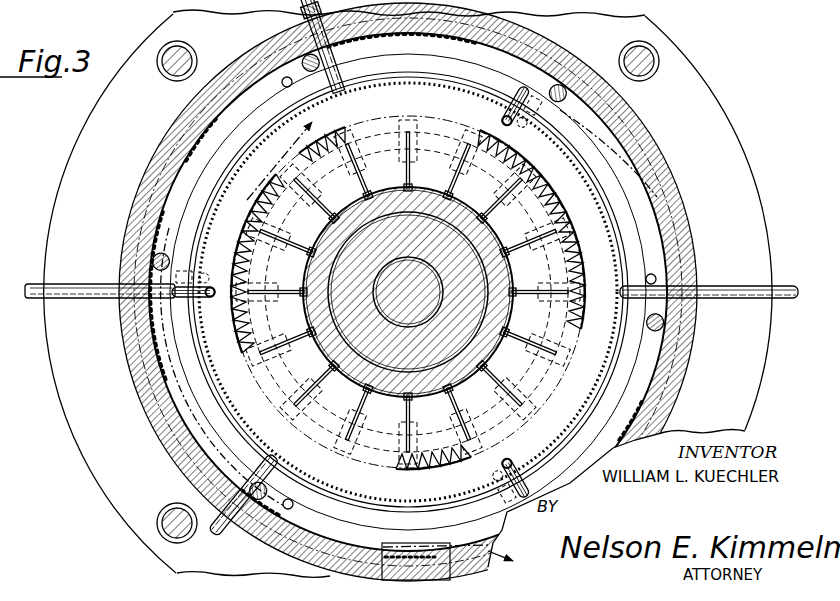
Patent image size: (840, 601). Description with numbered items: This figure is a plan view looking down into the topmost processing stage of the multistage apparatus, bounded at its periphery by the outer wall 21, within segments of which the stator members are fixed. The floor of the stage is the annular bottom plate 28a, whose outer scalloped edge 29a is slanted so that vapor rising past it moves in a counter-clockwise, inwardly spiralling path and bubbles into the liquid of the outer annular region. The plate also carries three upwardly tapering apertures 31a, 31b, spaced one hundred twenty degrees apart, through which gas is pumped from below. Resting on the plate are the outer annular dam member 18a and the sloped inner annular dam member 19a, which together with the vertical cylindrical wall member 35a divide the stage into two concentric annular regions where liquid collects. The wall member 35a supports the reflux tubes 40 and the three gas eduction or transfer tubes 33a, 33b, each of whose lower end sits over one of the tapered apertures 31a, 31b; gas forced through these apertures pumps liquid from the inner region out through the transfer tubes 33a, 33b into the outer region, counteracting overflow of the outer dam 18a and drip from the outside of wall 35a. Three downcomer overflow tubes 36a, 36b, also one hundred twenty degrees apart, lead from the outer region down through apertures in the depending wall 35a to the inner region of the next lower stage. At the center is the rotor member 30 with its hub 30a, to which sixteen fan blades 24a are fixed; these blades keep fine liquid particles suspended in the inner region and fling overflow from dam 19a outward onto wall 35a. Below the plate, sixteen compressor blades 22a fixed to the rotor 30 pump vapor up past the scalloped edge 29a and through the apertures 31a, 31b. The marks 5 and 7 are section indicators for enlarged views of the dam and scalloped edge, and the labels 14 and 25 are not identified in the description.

The section line 5- 5 is at (292, 150).
The section line 7- 7 is at (456, 561).
The shaft 14 is at (32, 283).
The outer annular dam member 18a is at (262, 380).
The inner annular dam member 19a is at (262, 212).
The outer wall 21 is at (637, 125).
The compressor blades 22a is at (410, 108).
The fan blades 24a is at (411, 160).
The hub 25 is at (420, 300).
The annular bottom plate 28a is at (178, 192).
The outer scalloped edge 29a is at (168, 372).
The rotor member 30 is at (416, 395).
The hub 30a is at (458, 382).
The upwardly tapering aperture 31a is at (212, 284).
The upwardly tapering aperture 31b is at (209, 318).
The gas eduction or transfer tube 33a is at (183, 284).
The gas eduction or transfer tube 33b is at (181, 306).
The vertical cylindrical or annular wall member 35a is at (613, 233).
The downcomer overflow tube 36a is at (300, 62).
The downcomer overflow tube 36b is at (283, 86).
The reflux tubes 40 is at (305, 13).